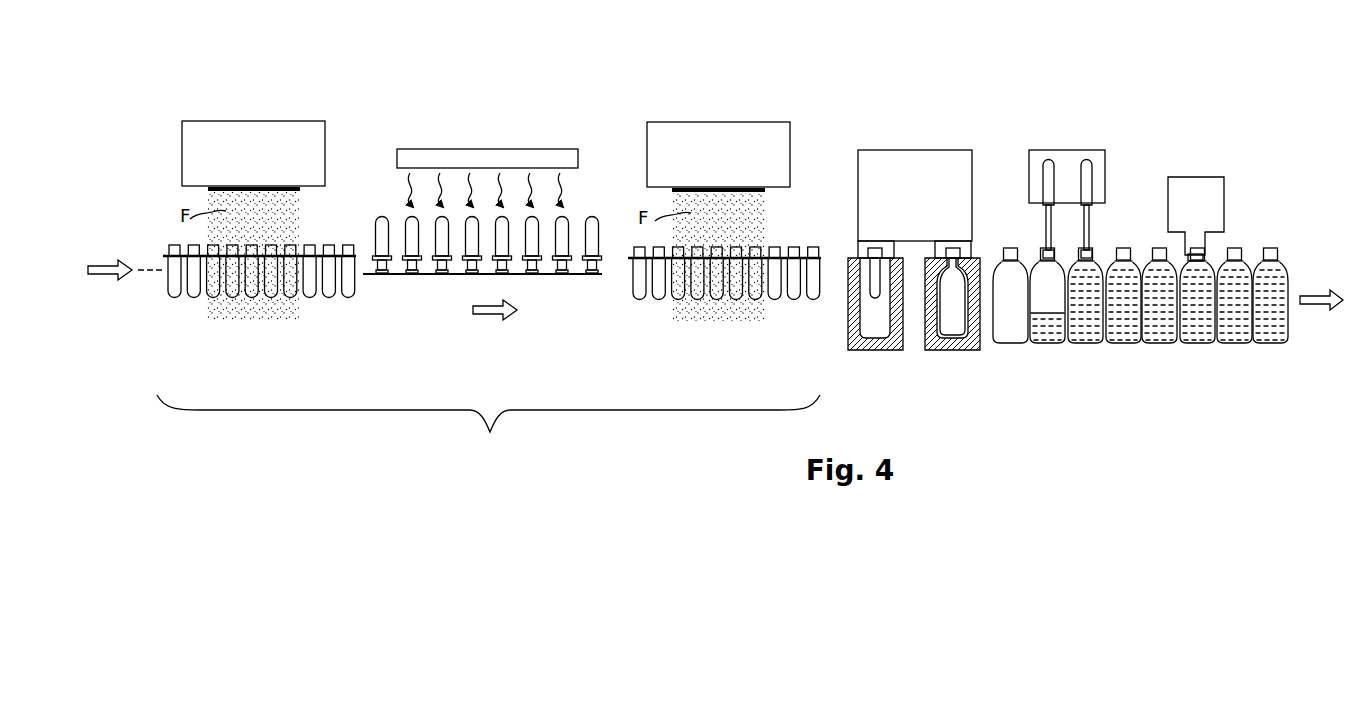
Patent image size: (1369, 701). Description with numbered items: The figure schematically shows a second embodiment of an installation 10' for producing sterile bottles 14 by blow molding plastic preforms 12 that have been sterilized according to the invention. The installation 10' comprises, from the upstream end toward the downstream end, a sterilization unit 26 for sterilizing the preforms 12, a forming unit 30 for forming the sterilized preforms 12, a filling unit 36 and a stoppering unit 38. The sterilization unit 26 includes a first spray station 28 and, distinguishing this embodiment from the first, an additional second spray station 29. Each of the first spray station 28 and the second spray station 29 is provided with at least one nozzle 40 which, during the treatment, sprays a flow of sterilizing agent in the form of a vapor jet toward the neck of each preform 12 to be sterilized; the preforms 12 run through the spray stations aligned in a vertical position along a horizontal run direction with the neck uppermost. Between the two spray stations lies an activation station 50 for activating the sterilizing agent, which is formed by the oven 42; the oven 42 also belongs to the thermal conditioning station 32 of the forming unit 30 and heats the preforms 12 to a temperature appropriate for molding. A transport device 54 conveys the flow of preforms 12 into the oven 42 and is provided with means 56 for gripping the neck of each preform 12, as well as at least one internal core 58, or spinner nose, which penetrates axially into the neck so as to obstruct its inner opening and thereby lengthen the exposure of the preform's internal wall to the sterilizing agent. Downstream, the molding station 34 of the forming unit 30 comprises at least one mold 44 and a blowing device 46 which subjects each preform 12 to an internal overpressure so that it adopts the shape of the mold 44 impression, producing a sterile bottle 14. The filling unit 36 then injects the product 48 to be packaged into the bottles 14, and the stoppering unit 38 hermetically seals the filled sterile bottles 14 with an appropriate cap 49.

The installation 10' is at (1200, 51).
The preform 12 is at (255, 302).
The bottle 14 is at (1158, 344).
The sterilization unit 26 is at (488, 427).
The first spray station 28 is at (241, 169).
The second spray station 29 is at (706, 169).
The forming unit 30 is at (893, 85).
The thermal conditioning station 32 is at (472, 118).
The molding station 34 is at (922, 122).
The filling unit 36 is at (1072, 138).
The stoppering unit 38 is at (1200, 171).
The nozzle 40 is at (302, 190).
The oven 42 is at (437, 152).
The mold 44 is at (876, 350).
The blowing device 46 is at (904, 204).
The product 48 is at (1088, 327).
The cap 49 is at (1233, 252).
The activation station 50 is at (498, 124).
The transport device 54 is at (525, 293).
The gripping means 56 is at (377, 259).
The internal core 58 is at (441, 260).